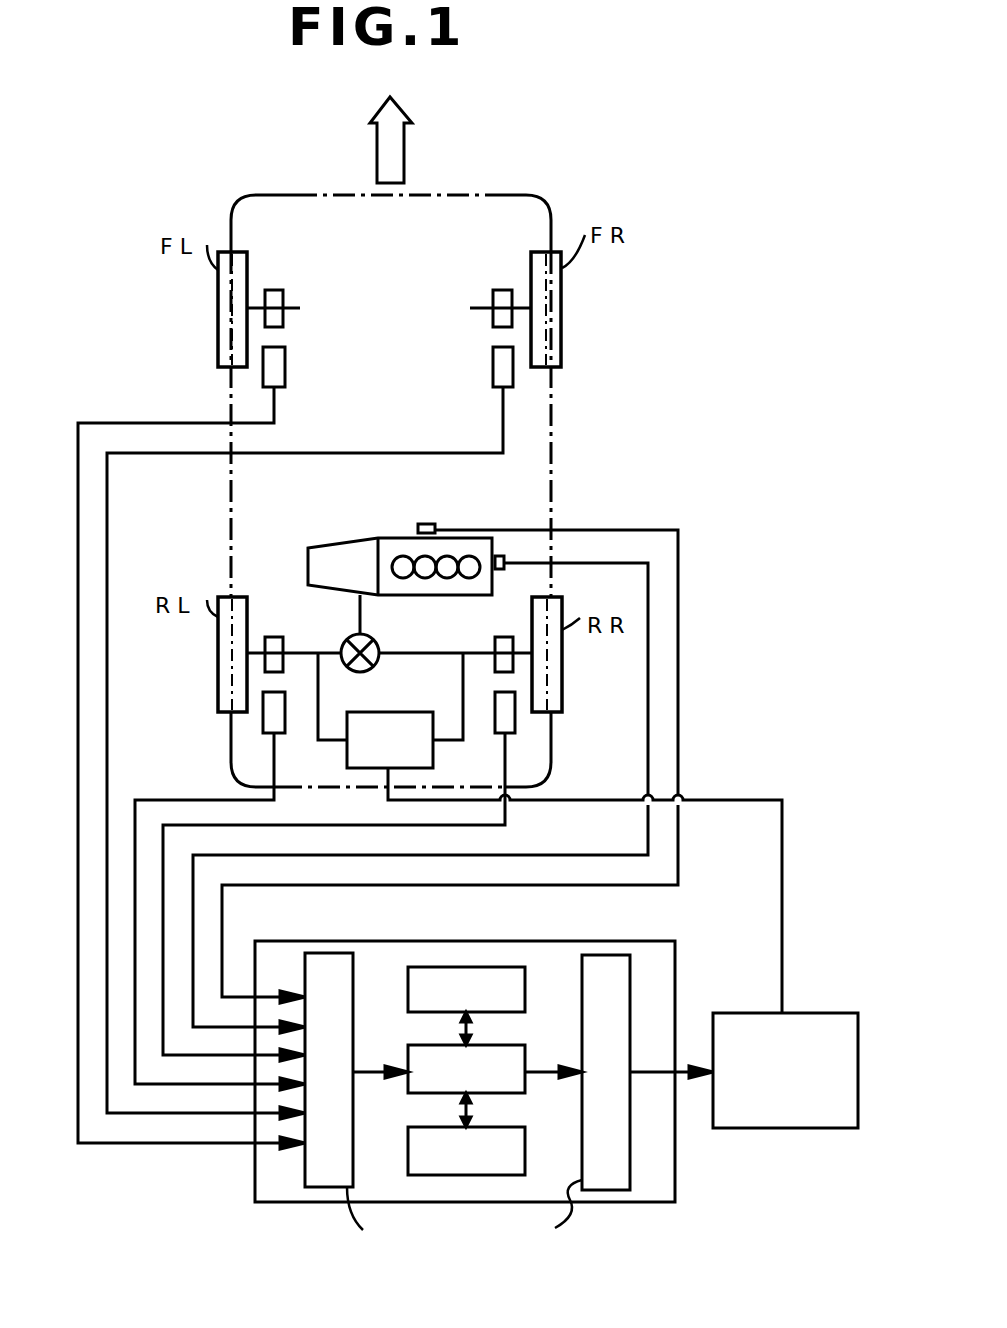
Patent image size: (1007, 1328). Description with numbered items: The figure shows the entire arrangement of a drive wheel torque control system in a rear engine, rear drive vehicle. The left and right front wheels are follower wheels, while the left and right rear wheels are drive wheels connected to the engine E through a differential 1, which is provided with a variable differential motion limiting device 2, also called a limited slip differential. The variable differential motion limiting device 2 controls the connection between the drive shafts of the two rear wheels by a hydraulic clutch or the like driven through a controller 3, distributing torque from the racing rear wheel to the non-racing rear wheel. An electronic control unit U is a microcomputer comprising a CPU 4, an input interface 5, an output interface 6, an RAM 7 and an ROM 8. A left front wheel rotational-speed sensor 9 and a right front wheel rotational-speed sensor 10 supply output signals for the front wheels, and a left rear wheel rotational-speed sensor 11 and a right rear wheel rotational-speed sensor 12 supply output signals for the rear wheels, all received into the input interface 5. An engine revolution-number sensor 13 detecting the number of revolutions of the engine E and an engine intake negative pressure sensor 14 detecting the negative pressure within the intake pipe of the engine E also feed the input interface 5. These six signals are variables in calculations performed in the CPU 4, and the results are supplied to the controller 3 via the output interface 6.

The differential 1 is at (370, 637).
The variable differential motion limiting device 2 is at (398, 757).
The controller 3 is at (748, 1013).
The CPU 4 is at (533, 1047).
The input interface 5 is at (348, 983).
The output interface 6 is at (640, 985).
The RAM 7 is at (527, 990).
The ROM 8 is at (525, 1138).
The left front wheel rotational-speed sensor 9 is at (285, 357).
The right front wheel rotational-speed sensor 10 is at (493, 355).
The left rear wheel rotational-speed sensor 11 is at (285, 698).
The right rear wheel rotational-speed sensor 12 is at (495, 698).
The engine revolution-number sensor 13 is at (498, 570).
The engine intake negative pressure sensor 14 is at (427, 522).
The engine E is at (388, 545).
The electronic control unit U is at (455, 940).